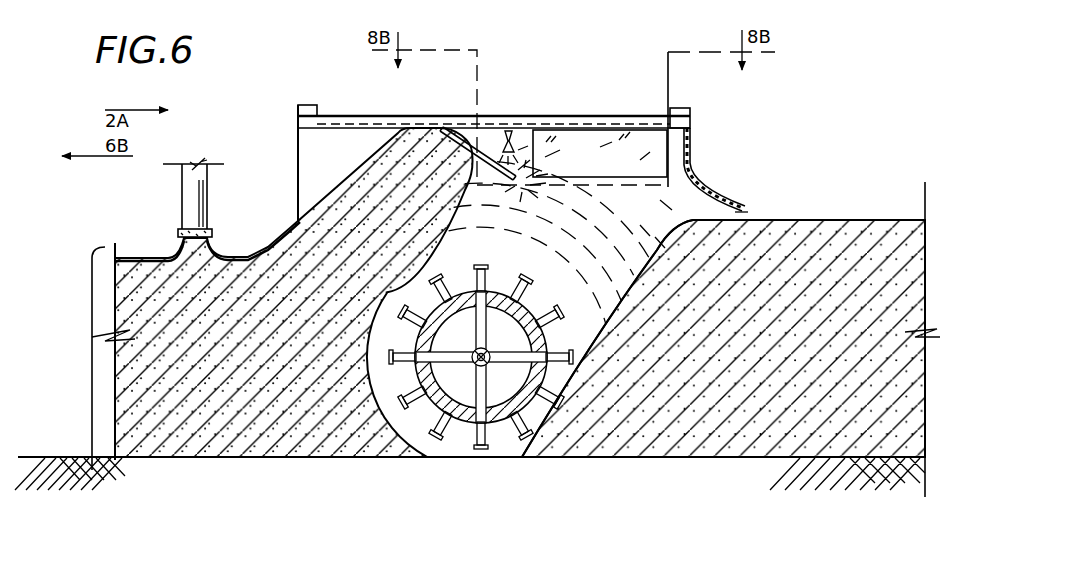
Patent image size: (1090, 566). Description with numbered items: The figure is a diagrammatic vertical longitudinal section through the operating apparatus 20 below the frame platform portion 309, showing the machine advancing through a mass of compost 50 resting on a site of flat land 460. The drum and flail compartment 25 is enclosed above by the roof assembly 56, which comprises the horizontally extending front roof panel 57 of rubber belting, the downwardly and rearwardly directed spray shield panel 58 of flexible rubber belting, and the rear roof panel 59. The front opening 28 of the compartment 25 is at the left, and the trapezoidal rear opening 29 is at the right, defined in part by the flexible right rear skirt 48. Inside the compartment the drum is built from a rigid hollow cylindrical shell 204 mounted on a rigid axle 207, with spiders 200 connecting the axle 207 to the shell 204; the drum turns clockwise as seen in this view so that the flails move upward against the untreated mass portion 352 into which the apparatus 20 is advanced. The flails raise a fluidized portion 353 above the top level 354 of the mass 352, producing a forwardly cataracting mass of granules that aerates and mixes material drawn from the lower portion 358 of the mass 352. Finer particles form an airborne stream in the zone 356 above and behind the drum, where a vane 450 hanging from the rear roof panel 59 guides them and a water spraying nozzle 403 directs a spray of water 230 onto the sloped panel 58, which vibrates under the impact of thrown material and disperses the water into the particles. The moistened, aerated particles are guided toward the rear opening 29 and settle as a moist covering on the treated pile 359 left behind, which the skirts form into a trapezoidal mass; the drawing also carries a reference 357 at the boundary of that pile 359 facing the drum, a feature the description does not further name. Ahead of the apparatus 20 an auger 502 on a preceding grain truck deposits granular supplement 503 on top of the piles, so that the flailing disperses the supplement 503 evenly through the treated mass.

The operating apparatus 20 is at (504, 143).
The drum and flail compartment 25 is at (321, 144).
The front opening 28 is at (296, 177).
The rear opening 29 is at (740, 213).
The flexible right rear skirt 48 is at (706, 201).
The mass of compost 50 is at (92, 335).
The roof assembly 56 is at (311, 128).
The front roof panel 57 is at (364, 123).
The spray shield panel 58 is at (482, 151).
The rear roof panel 59 is at (618, 127).
The spider 200 is at (481, 357).
The cylindrical shell 204 is at (486, 353).
The axle 207 is at (481, 345).
The spray of water 230 is at (521, 176).
The frame platform portion 309 is at (320, 102).
The untreated mass portion 352 is at (170, 333).
The fluidized portion 353 is at (300, 224).
The top level of the mass 354 is at (164, 256).
The zone of dispersed fine particles 356 is at (575, 221).
The cavity wall 357 is at (652, 264).
The lower portion of the mass 358 is at (322, 386).
The treated pile 359 is at (799, 280).
The water spraying nozzle 403 is at (511, 132).
The vane 450 is at (586, 141).
The flat land site 460 is at (68, 455).
The auger 502 is at (186, 199).
The supplement 503 is at (210, 236).